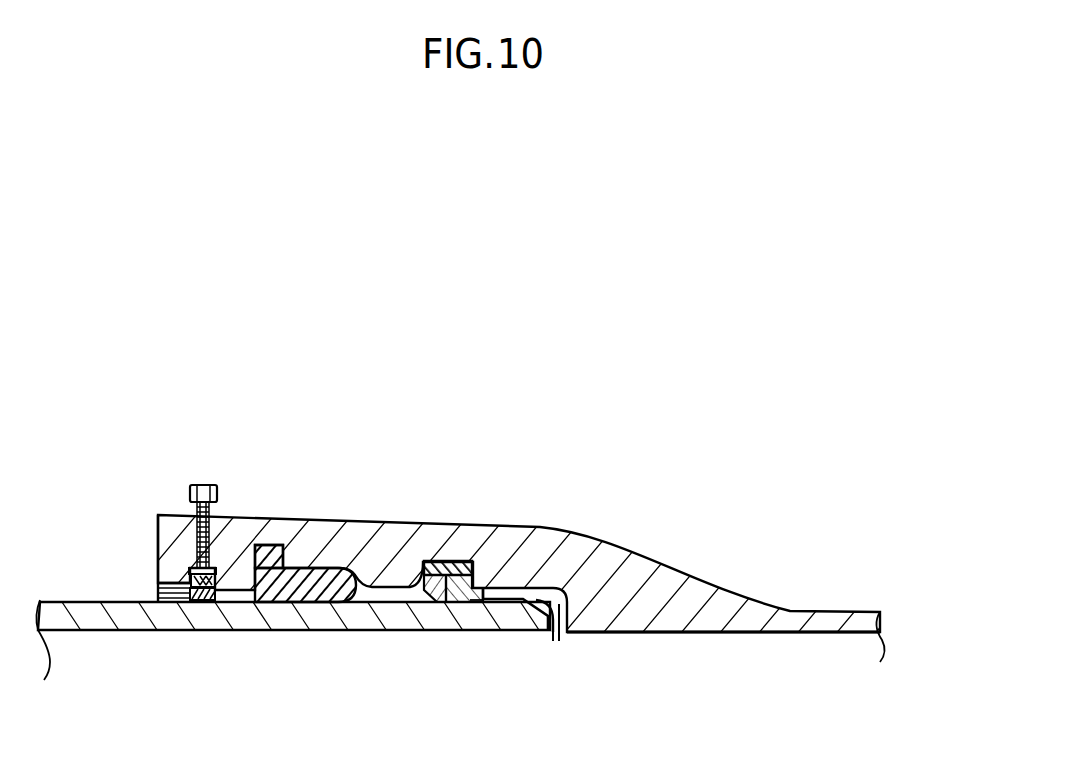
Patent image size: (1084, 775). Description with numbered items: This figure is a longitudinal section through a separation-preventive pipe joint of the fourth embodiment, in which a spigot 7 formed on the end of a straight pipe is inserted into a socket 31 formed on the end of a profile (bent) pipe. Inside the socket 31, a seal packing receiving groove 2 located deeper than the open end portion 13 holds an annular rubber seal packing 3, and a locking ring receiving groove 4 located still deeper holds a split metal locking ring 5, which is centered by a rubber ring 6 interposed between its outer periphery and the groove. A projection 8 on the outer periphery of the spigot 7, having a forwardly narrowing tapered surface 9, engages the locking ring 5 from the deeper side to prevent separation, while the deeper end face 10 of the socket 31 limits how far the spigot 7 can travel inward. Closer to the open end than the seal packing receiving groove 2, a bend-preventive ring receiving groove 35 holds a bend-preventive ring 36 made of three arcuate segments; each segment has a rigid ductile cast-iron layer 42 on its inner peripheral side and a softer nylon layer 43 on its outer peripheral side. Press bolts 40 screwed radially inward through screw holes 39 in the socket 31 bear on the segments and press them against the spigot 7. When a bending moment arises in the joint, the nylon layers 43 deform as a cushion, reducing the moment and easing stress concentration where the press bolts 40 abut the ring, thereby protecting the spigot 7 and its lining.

The seal packing receiving groove 2 is at (282, 606).
The seal packing 3 is at (327, 610).
The locking ring receiving groove 4 is at (452, 603).
The locking ring 5 is at (468, 600).
The rubber ring 6 is at (460, 572).
The spigot 7 is at (498, 632).
The projection 8 is at (507, 600).
The tapered surface 9 is at (552, 620).
The deeper end face 10 is at (560, 636).
The open end portion 13 is at (187, 585).
The socket 31 is at (370, 530).
The bend-preventive ring receiving groove 35 is at (193, 577).
The bend-preventive ring 36 is at (187, 597).
The screw hole 39 is at (197, 508).
The press bolt 40 is at (203, 485).
The ductile cast-iron layer 42 is at (200, 628).
The nylon layer 43 is at (187, 592).